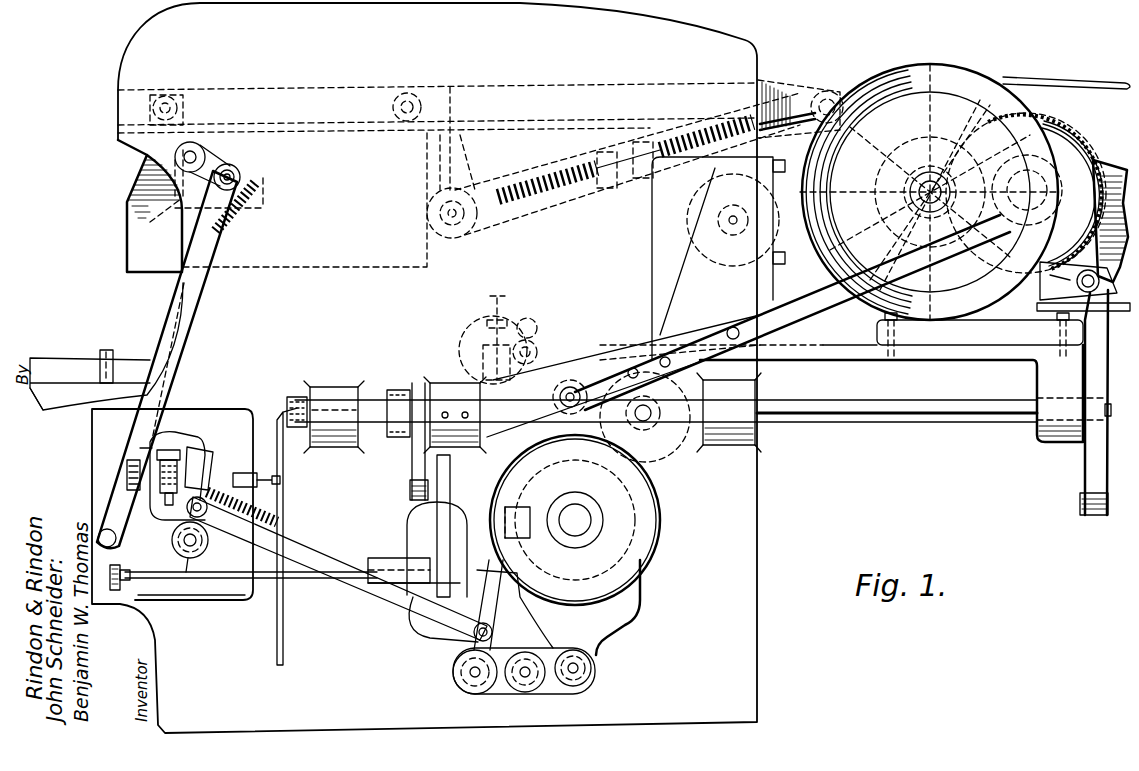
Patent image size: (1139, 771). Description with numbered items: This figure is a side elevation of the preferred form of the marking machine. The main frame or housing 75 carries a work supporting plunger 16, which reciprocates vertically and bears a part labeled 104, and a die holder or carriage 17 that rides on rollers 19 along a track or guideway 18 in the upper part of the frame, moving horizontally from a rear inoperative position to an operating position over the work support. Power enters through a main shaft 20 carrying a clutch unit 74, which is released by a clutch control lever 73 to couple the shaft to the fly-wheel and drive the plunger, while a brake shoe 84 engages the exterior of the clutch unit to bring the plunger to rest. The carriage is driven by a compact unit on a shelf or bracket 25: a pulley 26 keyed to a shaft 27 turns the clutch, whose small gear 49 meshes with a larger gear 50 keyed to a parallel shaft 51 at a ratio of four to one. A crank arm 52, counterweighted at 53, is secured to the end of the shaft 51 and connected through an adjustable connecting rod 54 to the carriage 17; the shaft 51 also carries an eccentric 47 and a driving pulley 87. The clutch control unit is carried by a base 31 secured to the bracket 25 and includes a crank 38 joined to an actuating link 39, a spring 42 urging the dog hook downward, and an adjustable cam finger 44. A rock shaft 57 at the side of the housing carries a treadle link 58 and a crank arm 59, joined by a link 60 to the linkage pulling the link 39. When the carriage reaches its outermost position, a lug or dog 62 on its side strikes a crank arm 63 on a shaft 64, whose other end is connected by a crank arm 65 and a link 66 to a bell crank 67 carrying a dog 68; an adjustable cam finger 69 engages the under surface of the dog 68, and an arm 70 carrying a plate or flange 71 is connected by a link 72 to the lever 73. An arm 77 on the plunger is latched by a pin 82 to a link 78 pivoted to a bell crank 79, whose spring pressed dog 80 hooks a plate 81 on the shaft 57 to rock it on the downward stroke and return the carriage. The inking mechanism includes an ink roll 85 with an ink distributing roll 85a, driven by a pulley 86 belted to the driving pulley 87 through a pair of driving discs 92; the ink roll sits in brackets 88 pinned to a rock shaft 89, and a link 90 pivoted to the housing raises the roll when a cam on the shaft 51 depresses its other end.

The housing 75 is at (717, 55).
The crank arm 63 is at (150, 206).
The die holder or carriage 17 is at (318, 262).
The rollers 19 is at (180, 108).
The shaft 64 is at (205, 152).
The crank arm 65 is at (238, 172).
The lug or dog 62 is at (266, 201).
The link 66 is at (196, 296).
The work supporting plunger 16 is at (97, 396).
The clip 104 is at (112, 350).
The dog 68 is at (183, 436).
The adjustable cam finger 69 is at (152, 457).
The arm 70 is at (208, 462).
The plate or flange 71 is at (200, 474).
The bell crank 67 is at (175, 544).
The link 72 is at (312, 553).
The pin 82 is at (300, 582).
The treadle link 58 is at (285, 632).
The pulley 86 is at (412, 624).
The arm 77 is at (430, 548).
The link 78 is at (451, 483).
The bell crank 79 is at (413, 447).
The plate 81 is at (410, 392).
The spring pressed dog 80 is at (360, 444).
The brackets 88 is at (471, 415).
The rock shaft 57 is at (915, 410).
The rock shaft 89 is at (580, 383).
The link 90 is at (690, 348).
The driving discs 92 is at (462, 340).
The ink-roll 85 is at (490, 338).
The roller 85a is at (540, 340).
The base 31 is at (1005, 338).
The adjustable connecting rod 54 is at (562, 166).
The track or guideway 18 is at (778, 82).
The pulley 26 is at (1003, 86).
The crank arm 52 is at (950, 90).
The small gear 49 is at (905, 195).
The shaft 27 is at (922, 200).
The eccentric 47 is at (950, 262).
The larger gear 50 is at (1078, 138).
The shaft 51 is at (1083, 195).
The driving pulley 87 is at (1111, 221).
The spring 42 is at (1079, 263).
The counterweight 53 is at (1079, 263).
The crank 38 is at (1073, 283).
The actuating link 39 is at (1100, 336).
The adjustable cam finger 44 is at (980, 336).
The shelf or bracket 25 is at (928, 350).
The crank arm 59 is at (1085, 466).
The link 60 is at (1100, 513).
The clutch unit 74 is at (605, 545).
The main shaft 20 is at (580, 520).
The clutch control lever 73 is at (502, 578).
The brake shoe 84 is at (612, 602).